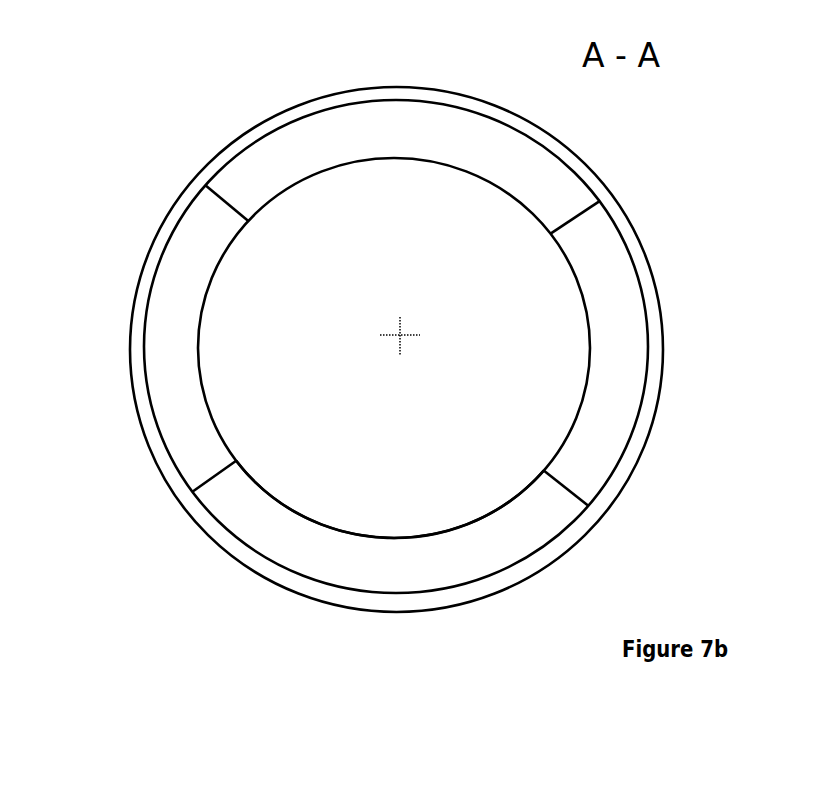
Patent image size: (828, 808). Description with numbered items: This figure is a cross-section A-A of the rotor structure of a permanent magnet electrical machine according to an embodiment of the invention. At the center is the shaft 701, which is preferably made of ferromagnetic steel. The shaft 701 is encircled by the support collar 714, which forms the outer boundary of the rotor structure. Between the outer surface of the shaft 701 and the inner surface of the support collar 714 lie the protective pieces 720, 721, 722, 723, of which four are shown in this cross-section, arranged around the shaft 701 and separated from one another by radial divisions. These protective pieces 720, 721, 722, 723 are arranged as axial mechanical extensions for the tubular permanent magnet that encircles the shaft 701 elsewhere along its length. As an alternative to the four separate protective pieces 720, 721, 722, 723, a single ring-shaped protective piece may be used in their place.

The support collar 714 is at (294, 106).
The protective piece 720 is at (440, 120).
The shaft 701 is at (418, 254).
The protective piece 721 is at (623, 288).
The protective piece 722 is at (356, 578).
The protective piece 723 is at (162, 400).